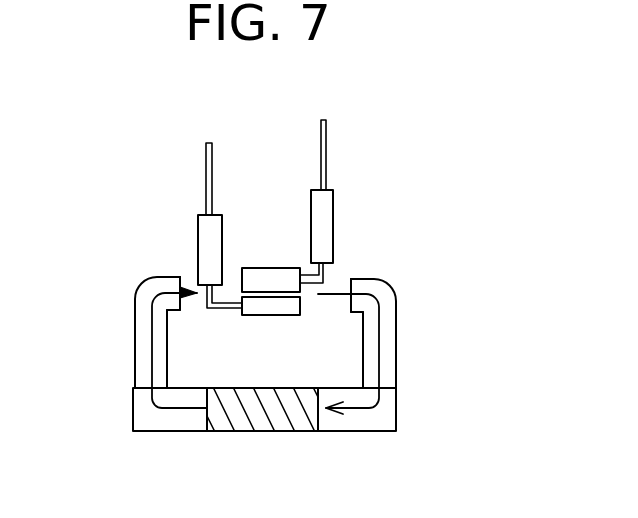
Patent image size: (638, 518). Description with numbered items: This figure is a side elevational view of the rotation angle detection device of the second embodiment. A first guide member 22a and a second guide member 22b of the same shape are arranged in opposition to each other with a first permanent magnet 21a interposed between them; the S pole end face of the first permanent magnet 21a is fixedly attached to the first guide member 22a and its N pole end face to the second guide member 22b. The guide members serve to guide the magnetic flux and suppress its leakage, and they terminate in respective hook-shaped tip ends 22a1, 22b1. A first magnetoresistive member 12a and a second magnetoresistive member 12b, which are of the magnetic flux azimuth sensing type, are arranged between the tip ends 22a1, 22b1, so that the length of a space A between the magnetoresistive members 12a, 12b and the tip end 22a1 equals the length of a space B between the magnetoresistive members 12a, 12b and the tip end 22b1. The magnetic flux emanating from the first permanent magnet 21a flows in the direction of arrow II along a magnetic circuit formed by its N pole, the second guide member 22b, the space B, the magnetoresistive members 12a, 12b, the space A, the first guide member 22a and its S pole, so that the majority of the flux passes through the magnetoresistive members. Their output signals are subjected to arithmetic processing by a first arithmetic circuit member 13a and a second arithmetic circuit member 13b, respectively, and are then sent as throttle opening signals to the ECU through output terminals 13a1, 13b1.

The output terminal 13b1 is at (205, 155).
The second arithmetic circuit member 13b is at (203, 230).
The output terminal 13a1 is at (326, 133).
The first arithmetic circuit member 13a is at (323, 212).
The first magnetoresistive member 12a is at (260, 268).
The second magnetoresistive member 12b is at (263, 313).
The hook-shaped tip end of first guide member 22a1 is at (365, 292).
The hook-shaped tip end of second guide member 22b1 is at (162, 285).
The first guide member 22a is at (375, 417).
The second guide member 22b is at (153, 415).
The first permanent magnet 21a is at (278, 420).
The space A is at (337, 282).
The space B is at (188, 275).
The arrow II is at (182, 407).